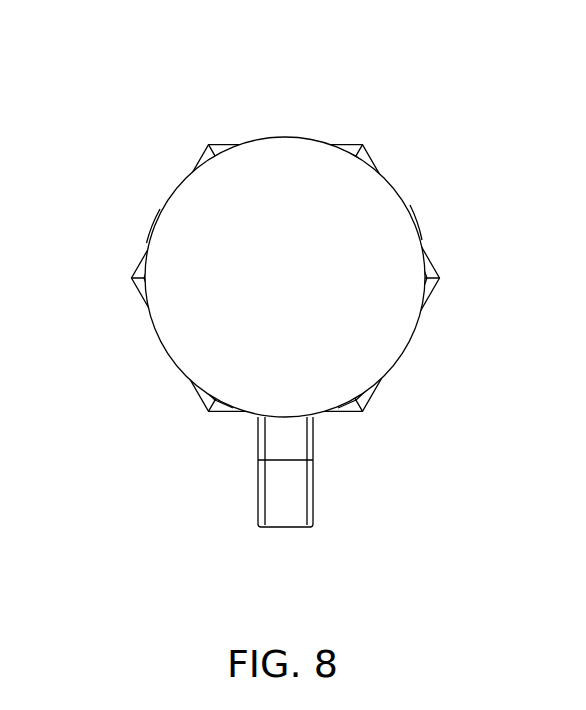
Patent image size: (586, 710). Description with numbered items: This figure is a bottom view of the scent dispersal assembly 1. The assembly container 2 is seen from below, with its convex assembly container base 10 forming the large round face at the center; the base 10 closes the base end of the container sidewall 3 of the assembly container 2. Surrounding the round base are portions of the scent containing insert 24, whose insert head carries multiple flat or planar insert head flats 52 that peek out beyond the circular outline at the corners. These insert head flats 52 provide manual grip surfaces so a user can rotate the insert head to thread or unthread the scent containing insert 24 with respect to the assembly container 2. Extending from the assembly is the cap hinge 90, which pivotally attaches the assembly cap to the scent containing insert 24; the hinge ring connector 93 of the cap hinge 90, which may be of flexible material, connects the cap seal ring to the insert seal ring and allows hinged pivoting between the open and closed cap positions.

The scent dispersal assembly 1 is at (124, 143).
The assembly container 2 is at (147, 220).
The container sidewall 3 is at (417, 223).
The assembly container base 10 is at (275, 165).
The scent containing insert 24 is at (208, 133).
The insert head flats 52 is at (148, 300).
The cap hinge 90 is at (291, 532).
The hinge ring connector 93 is at (277, 497).